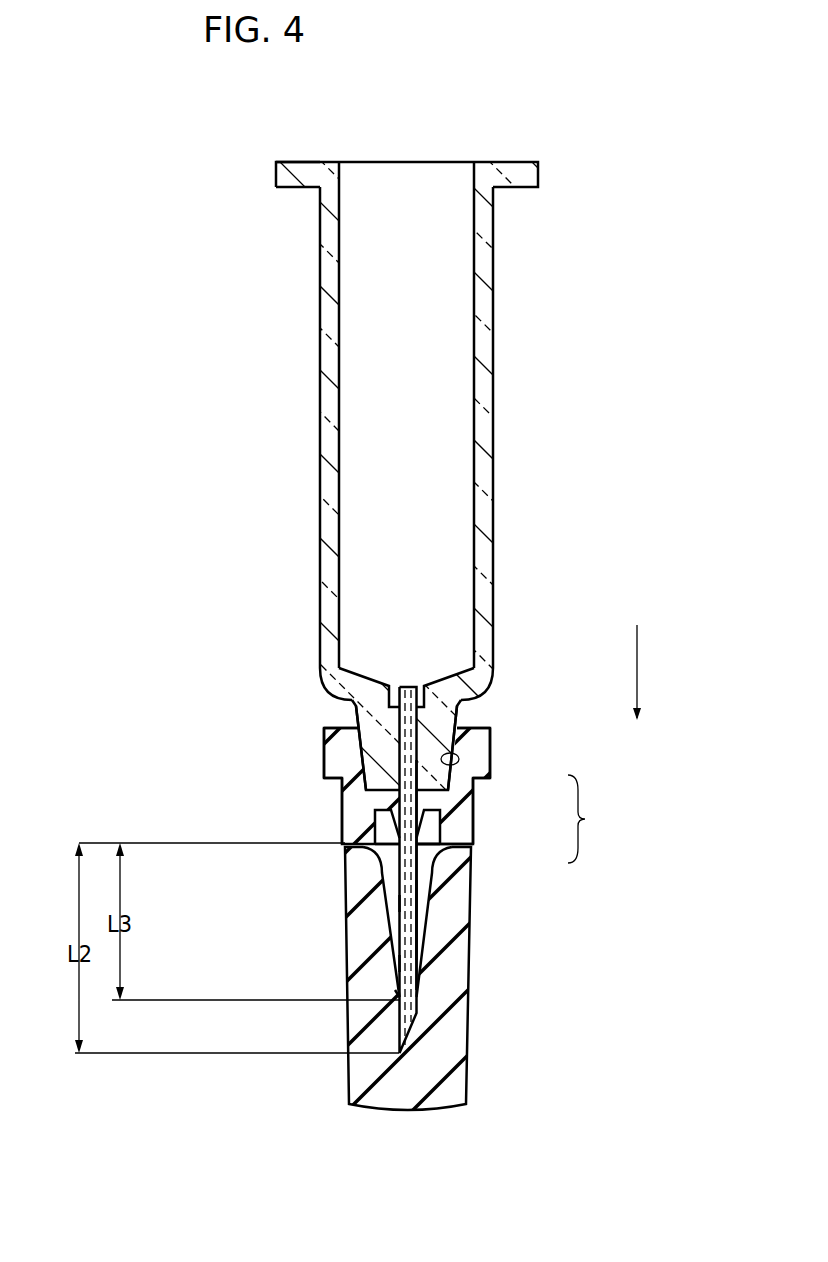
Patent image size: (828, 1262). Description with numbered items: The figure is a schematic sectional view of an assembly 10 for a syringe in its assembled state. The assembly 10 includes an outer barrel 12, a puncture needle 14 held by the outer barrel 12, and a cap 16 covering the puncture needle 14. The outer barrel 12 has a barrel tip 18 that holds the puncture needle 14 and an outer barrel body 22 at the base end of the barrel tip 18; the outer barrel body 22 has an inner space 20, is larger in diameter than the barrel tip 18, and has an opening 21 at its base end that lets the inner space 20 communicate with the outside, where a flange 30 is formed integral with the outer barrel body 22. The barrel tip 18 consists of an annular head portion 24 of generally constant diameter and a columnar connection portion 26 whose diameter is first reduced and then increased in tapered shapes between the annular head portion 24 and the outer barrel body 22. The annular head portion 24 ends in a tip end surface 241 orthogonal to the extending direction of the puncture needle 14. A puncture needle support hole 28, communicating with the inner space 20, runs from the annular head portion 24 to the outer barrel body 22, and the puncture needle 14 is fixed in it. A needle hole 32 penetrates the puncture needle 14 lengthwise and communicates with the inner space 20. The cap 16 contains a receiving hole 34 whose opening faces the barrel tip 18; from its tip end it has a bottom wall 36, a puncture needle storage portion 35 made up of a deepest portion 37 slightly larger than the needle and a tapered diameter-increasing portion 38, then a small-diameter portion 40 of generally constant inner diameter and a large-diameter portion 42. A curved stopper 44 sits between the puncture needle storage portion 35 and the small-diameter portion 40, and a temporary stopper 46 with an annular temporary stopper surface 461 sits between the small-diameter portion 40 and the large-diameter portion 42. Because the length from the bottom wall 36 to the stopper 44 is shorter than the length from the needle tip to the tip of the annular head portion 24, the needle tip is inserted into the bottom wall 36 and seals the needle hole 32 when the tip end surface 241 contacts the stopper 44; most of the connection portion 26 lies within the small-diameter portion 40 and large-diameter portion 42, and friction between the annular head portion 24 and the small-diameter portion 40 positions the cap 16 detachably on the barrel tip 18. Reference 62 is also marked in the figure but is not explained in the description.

The assembly for a syringe 10 is at (537, 692).
The outer barrel 12 is at (500, 400).
The puncture needle 14 is at (420, 921).
The cap 16 is at (468, 1080).
The barrel tip 18 is at (480, 815).
The inner space 20 is at (352, 350).
The opening 21 is at (466, 165).
The outer barrel body 22 is at (497, 488).
The annular head portion 24 is at (450, 824).
The tip end surface 241 is at (445, 856).
The connection portion 26 is at (470, 786).
The puncture needle support hole 28 is at (395, 737).
The flange 30 is at (301, 176).
The needle hole 32 is at (428, 930).
The receiving hole 34 is at (230, 995).
The puncture needle storage portion 35 is at (268, 878).
The bottom wall 36 is at (397, 996).
The deepest portion 37 is at (402, 958).
The diameter-increasing portion 38 is at (400, 898).
The small-diameter portion 40 is at (364, 811).
The large-diameter portion 42 is at (366, 743).
The stopper 44 is at (428, 883).
The temporary stopper 46 is at (460, 748).
The temporary stopper surface 461 is at (455, 760).
The cap contact portion 62 is at (443, 872).